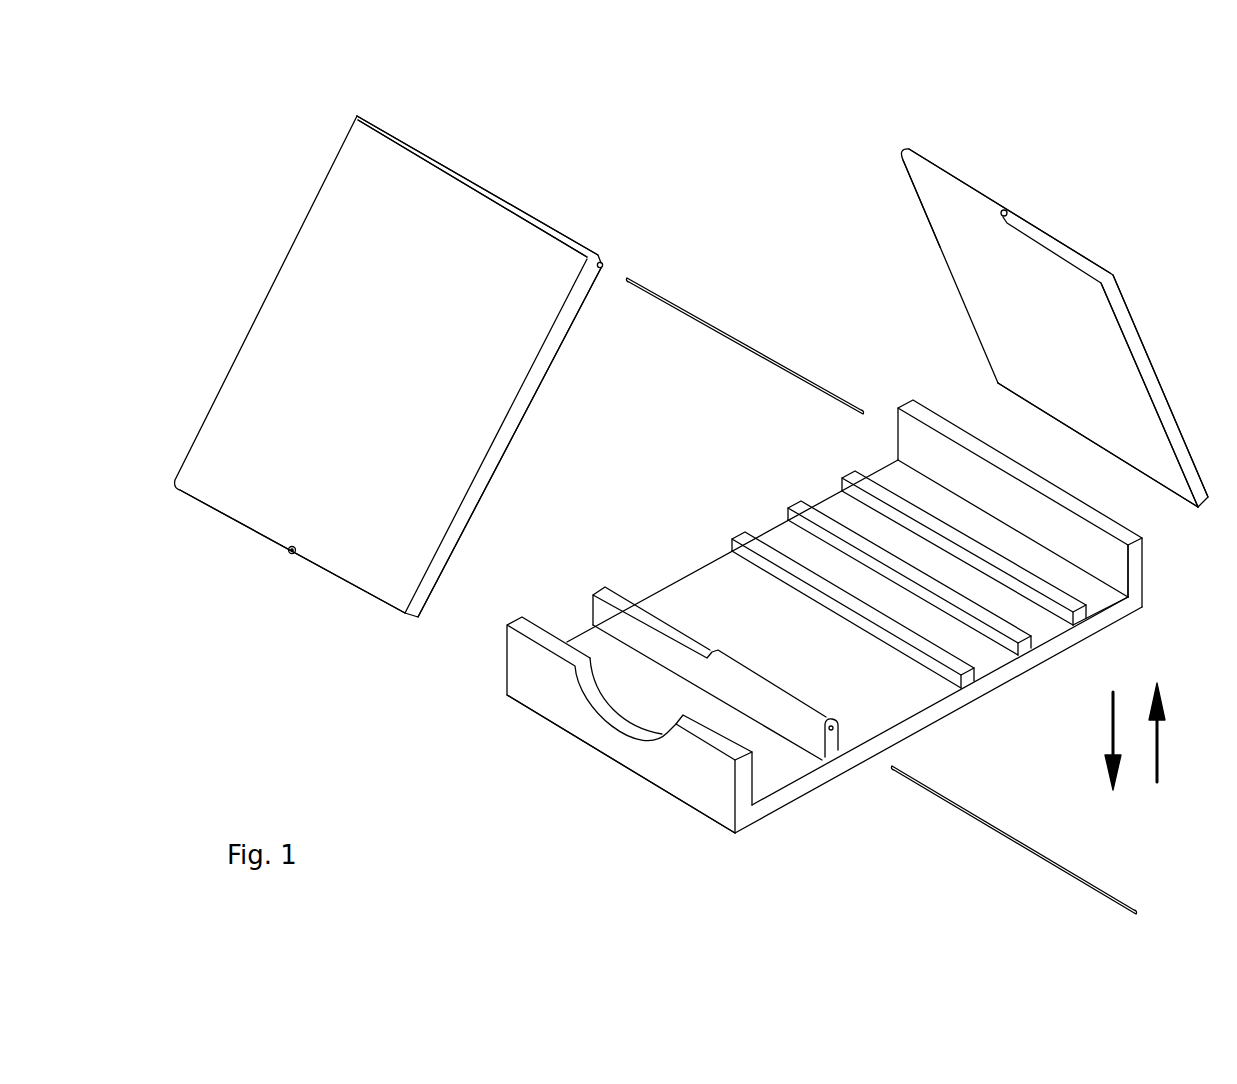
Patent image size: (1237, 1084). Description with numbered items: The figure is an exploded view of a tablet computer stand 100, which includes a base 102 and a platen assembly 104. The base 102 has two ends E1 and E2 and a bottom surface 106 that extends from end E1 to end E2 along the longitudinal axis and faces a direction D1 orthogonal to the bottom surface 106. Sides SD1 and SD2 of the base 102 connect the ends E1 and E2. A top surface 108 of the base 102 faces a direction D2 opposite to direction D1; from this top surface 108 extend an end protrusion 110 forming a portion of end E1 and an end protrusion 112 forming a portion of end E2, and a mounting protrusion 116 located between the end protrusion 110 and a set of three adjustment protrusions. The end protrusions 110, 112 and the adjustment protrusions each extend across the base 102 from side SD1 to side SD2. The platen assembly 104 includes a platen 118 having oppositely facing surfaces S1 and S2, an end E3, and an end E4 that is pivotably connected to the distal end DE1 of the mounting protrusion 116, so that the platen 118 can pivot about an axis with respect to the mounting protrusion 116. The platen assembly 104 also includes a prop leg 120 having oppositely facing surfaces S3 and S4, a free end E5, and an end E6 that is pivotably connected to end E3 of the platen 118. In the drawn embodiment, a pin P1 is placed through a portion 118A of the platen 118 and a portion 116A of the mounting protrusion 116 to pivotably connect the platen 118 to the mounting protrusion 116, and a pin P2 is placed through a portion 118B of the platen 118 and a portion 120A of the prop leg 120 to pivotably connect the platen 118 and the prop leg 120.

The stand 100 is at (1128, 200).
The base 102 is at (811, 628).
The platen assembly 104 is at (700, 193).
The bottom surface 106 is at (1077, 648).
The top surface 108 is at (693, 593).
The end protrusion 110 is at (533, 678).
The end protrusion 112 is at (1143, 590).
The mounting protrusion 116 is at (834, 778).
The portion of the mounting protrusion 116A is at (792, 700).
The platen 118 is at (415, 373).
The portion of the platen 118A is at (202, 500).
The portion of the platen 118B is at (604, 268).
The prop leg 120 is at (1022, 314).
The portion of the prop leg 120A is at (923, 165).
The pin P1 is at (952, 808).
The pin P2 is at (798, 390).
The surface S1 is at (357, 317).
The surface S2 is at (527, 444).
The surface S3 is at (1135, 322).
The surface S4 is at (1095, 377).
The end E1 is at (631, 771).
The end E2 is at (1144, 557).
The end E3 is at (445, 160).
The end E4 is at (270, 542).
The end E5 is at (1077, 433).
The end E6 is at (980, 190).
The side SD1 is at (987, 685).
The side SD2 is at (772, 525).
The distal end DE1 is at (783, 722).
The direction D1 is at (1112, 723).
The direction D2 is at (1160, 747).